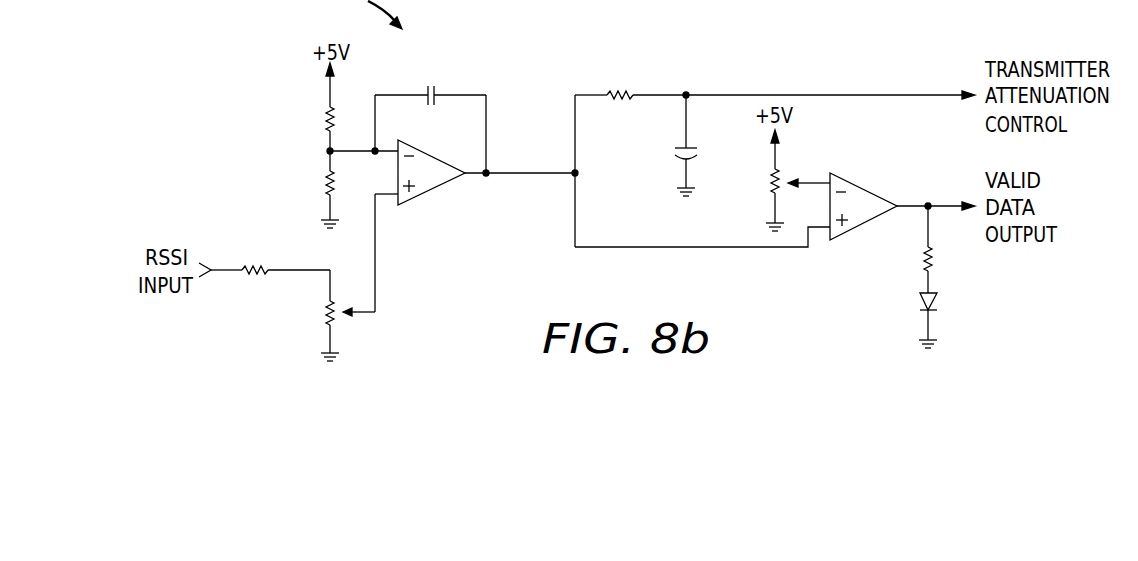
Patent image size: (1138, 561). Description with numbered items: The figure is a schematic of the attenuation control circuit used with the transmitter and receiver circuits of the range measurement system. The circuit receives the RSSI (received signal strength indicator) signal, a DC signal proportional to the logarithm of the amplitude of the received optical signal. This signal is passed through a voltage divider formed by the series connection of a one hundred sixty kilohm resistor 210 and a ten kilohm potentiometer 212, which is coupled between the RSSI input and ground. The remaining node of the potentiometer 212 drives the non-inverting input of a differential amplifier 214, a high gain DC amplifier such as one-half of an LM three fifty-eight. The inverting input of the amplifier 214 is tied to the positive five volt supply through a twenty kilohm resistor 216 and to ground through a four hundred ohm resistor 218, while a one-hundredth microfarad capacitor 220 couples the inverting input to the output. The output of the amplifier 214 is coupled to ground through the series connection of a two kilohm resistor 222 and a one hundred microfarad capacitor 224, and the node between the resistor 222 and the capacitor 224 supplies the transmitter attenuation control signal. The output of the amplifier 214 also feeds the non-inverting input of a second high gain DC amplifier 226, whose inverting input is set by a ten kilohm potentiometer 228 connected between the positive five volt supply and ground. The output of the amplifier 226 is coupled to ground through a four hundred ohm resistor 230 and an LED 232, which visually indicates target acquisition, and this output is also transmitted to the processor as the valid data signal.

The 160 kΩ resistor 210 is at (255, 278).
The 10 kΩ potentiometer 212 is at (345, 318).
The differential amplifier 214 is at (440, 192).
The 20 kΩ resistor 216 is at (326, 108).
The 400 Ω resistor 218 is at (323, 193).
The 0.01 μF capacitor 220 is at (443, 87).
The 2 kΩ resistor 222 is at (620, 90).
The 100 μF capacitor 224 is at (680, 163).
The second high gain DC amplifier 226 is at (868, 188).
The 10 kΩ potentiometer 228 is at (781, 178).
The 400 Ω resistor 230 is at (935, 262).
The LED 232 is at (919, 305).